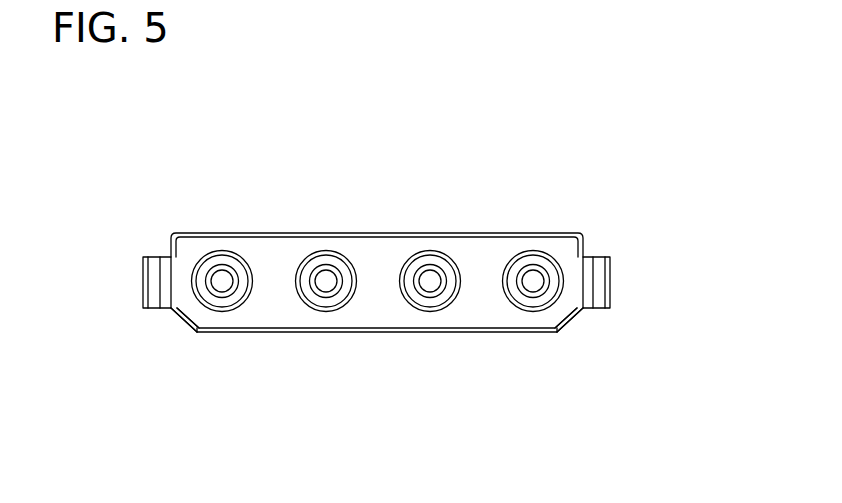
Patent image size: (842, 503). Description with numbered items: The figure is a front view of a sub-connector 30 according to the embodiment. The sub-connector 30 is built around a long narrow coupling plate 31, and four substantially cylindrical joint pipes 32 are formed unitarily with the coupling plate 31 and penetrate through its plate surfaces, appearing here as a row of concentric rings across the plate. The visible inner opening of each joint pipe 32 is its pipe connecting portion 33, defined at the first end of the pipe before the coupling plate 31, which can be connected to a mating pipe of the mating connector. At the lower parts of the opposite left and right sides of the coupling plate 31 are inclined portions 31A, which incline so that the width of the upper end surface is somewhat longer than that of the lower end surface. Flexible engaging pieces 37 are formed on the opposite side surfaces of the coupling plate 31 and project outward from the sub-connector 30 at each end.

The sub-connector 30 is at (390, 410).
The coupling plate 31 is at (475, 249).
The inclined portions 31A is at (183, 326).
The joint pipes 32 is at (241, 323).
The pipe connecting portion 33 is at (336, 265).
The flexible engaging pieces 37 is at (131, 281).